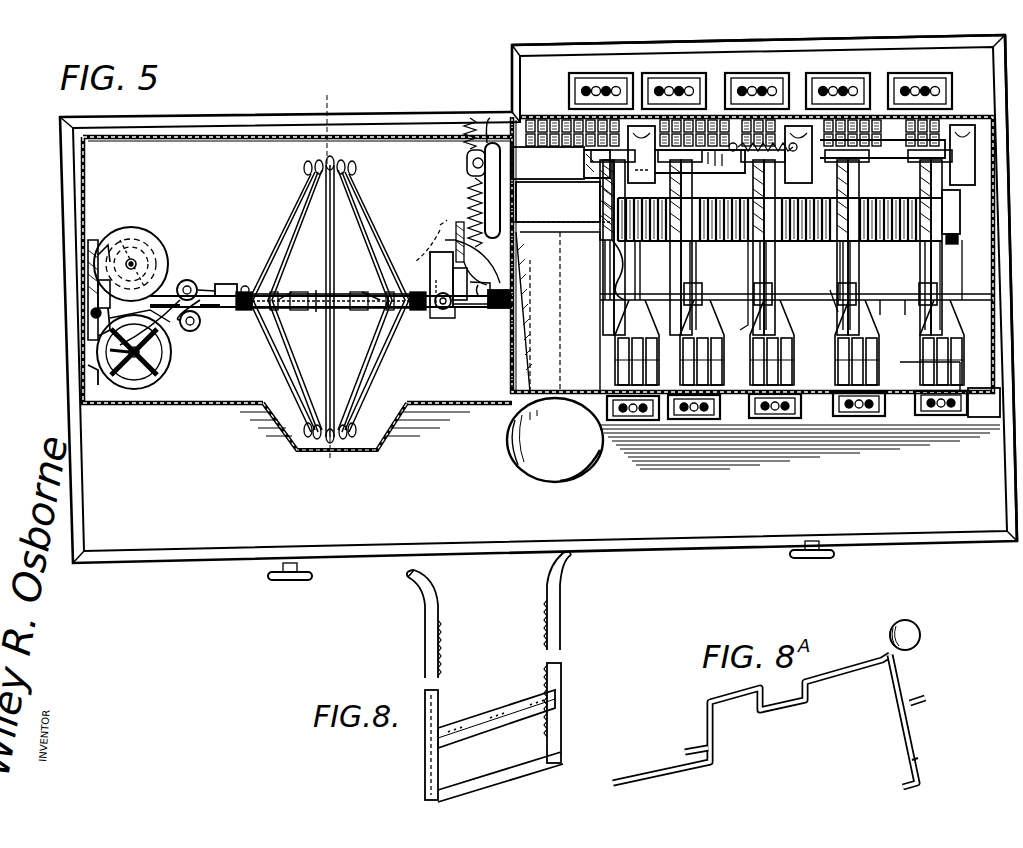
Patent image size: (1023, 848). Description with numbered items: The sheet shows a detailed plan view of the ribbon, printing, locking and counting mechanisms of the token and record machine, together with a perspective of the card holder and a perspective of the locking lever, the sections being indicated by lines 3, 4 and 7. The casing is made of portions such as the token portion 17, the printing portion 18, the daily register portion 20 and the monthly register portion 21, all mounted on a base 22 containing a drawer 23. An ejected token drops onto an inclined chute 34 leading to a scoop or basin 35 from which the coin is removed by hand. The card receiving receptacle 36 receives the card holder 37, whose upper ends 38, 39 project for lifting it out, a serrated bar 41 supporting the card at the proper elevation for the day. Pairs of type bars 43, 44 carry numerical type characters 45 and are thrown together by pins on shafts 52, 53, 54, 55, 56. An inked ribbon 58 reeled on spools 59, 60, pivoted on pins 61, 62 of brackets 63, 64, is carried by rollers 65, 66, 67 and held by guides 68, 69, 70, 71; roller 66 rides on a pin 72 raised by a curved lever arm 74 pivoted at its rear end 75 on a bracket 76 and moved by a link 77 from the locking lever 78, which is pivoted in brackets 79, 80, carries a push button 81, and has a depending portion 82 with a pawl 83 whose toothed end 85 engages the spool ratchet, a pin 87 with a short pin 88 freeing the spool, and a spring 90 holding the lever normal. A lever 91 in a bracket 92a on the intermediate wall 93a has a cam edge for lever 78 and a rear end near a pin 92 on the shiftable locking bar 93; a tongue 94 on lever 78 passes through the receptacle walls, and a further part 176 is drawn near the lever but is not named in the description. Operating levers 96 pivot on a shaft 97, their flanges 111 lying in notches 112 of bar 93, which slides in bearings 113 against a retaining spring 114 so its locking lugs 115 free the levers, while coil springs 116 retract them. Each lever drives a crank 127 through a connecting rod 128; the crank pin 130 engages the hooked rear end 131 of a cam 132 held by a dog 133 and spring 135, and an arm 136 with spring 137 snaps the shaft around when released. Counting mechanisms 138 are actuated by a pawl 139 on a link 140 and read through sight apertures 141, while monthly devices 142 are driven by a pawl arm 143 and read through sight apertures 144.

In FIG. 5, the casing top wall 3 is at (962, 290).
In FIG. 5, the center line / axis 4 is at (338, 580).
In FIG. 5, the panel 7 is at (83, 132).
In FIG. 5, the casing portion 17 is at (305, 133).
In FIG. 5, the casing portion 18 is at (290, 432).
In FIG. 5, the casing portion 20 is at (987, 415).
In FIG. 5, the casing portion 21 is at (763, 68).
In FIG. 5, the base 22 is at (97, 480).
In FIG. 5, the drawer 23 is at (285, 577).
In FIG. 5, the inclined chute 34 is at (635, 300).
In FIG. 5, the scoop or basin 35 is at (527, 448).
In FIG. 5, the card receiving receptacle 36 is at (318, 292).
In FIG. 8, the card holder 37 is at (425, 632).
In FIG. 5, the upper end of holder 38 is at (250, 300).
In FIG. 8, the upper end of holder 38 is at (408, 575).
In FIG. 5, the upper end of holder 39 is at (388, 307).
In FIG. 8, the upper end of holder 39 is at (568, 563).
In FIG. 5, the bar 41 is at (346, 305).
In FIG. 8, the bar 41 is at (481, 728).
In FIG. 5, the type bar 43 is at (378, 368).
In FIG. 5, the type bar 44 is at (352, 212).
In FIG. 5, the numerical type characters 45 is at (300, 192).
In FIG. 5, the shaft 52 is at (899, 342).
In FIG. 5, the shaft 53 is at (811, 270).
In FIG. 5, the shaft 54 is at (796, 307).
In FIG. 5, the shaft 55 is at (637, 270).
In FIG. 5, the shaft 56 is at (497, 322).
In FIG. 5, the inked ribbon 58 is at (150, 356).
In FIG. 5, the spool 59 is at (135, 232).
In FIG. 5, the spool 60 is at (135, 385).
In FIG. 5, the pin 61 is at (118, 350).
In FIG. 5, the pin 62 is at (138, 262).
In FIG. 5, the bracket 63 is at (85, 370).
In FIG. 5, the bracket 64 is at (80, 250).
In FIG. 5, the roller 65 is at (198, 328).
In FIG. 5, the roller 66 is at (445, 312).
In FIG. 5, the roller 67 is at (212, 308).
In FIG. 5, the guide 68 is at (288, 312).
In FIG. 5, the guide 69 is at (380, 322).
In FIG. 5, the guide 70 is at (362, 292).
In FIG. 5, the guide 71 is at (292, 292).
In FIG. 5, the pin 72 is at (450, 307).
In FIG. 5, the curved lever arm 74 is at (438, 312).
In FIG. 5, the rear end of lever arm 75 is at (456, 236).
In FIG. 5, the bracket 76 is at (457, 251).
In FIG. 5, the link 77 is at (432, 276).
In FIG. 5, the locking lever 78 is at (205, 280).
In FIG. 8A, the locking lever 78 is at (915, 735).
In FIG. 5, the bracket 79 is at (512, 298).
In FIG. 5, the bracket 80 is at (225, 286).
In FIG. 5, the push button 81 is at (108, 330).
In FIG. 8A, the push button 81 is at (912, 636).
In FIG. 5, the depending portion 82 is at (185, 282).
In FIG. 8A, the depending portion 82 is at (712, 752).
In FIG. 5, the pawl 83 is at (80, 290).
In FIG. 5, the toothed end 85 is at (75, 268).
In FIG. 5, the pin 87 is at (88, 313).
In FIG. 5, the short pin 88 is at (148, 312).
In FIG. 5, the spring 90 is at (485, 178).
In FIG. 5, the lever 91 is at (475, 202).
In FIG. 5, the pin 92 is at (470, 163).
In FIG. 5, the bracket 92a is at (520, 248).
In FIG. 5, the shiftable locking bar 93 is at (520, 147).
In FIG. 5, the intermediate wall 93a is at (513, 305).
In FIG. 8A, the tongue 94 is at (790, 703).
In FIG. 5, the lever 96 is at (682, 190).
In FIG. 5, the shaft 97 is at (960, 212).
In FIG. 5, the flange 111 is at (600, 160).
In FIG. 5, the notch 112 is at (582, 165).
In FIG. 5, the bearing 113 is at (643, 163).
In FIG. 5, the retaining spring 114 is at (770, 154).
In FIG. 5, the locking lug 115 is at (592, 190).
In FIG. 5, the coil spring 116 is at (605, 240).
In FIG. 5, the crank 127 is at (840, 265).
In FIG. 5, the connecting rod 128 is at (920, 246).
In FIG. 5, the pin 130 is at (752, 268).
In FIG. 5, the hooked rear end 131 is at (692, 283).
In FIG. 5, the cam 132 is at (938, 268).
In FIG. 5, the dog 133 is at (758, 316).
In FIG. 5, the spring 135 is at (682, 338).
In FIG. 5, the arm 136 is at (838, 312).
In FIG. 5, the spring 137 is at (715, 342).
In FIG. 5, the counting mechanism 138 is at (940, 420).
In FIG. 5, the pawl 139 is at (840, 352).
In FIG. 5, the link 140 is at (945, 265).
In FIG. 5, the sight aperture 141 is at (830, 422).
In FIG. 5, the monthly total device 142 is at (600, 78).
In FIG. 5, the pawl arm 143 is at (858, 183).
In FIG. 5, the sight aperture 144 is at (915, 78).
In FIG. 5, the bar 176 is at (455, 245).